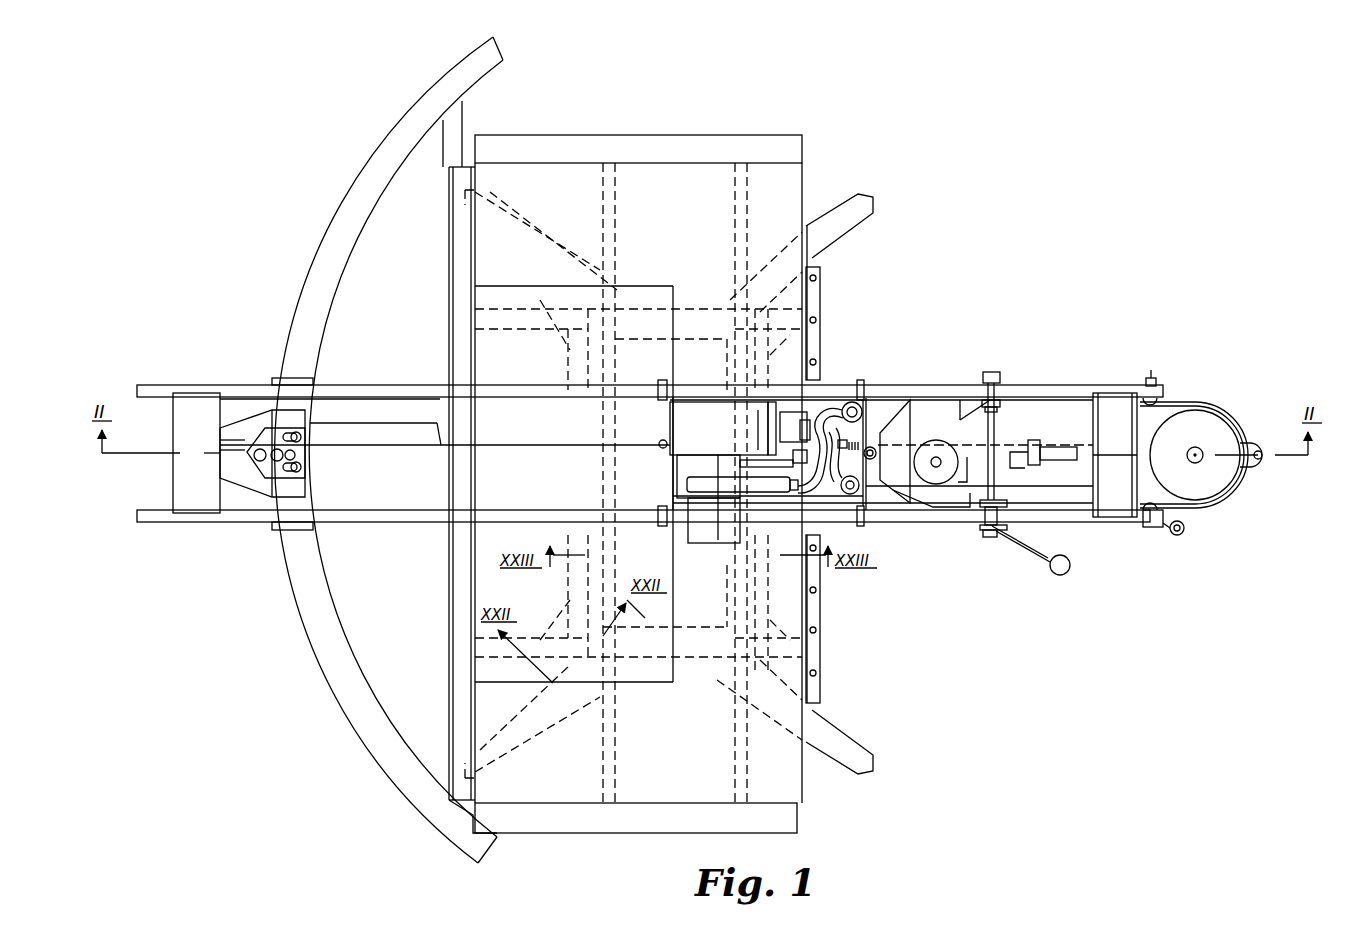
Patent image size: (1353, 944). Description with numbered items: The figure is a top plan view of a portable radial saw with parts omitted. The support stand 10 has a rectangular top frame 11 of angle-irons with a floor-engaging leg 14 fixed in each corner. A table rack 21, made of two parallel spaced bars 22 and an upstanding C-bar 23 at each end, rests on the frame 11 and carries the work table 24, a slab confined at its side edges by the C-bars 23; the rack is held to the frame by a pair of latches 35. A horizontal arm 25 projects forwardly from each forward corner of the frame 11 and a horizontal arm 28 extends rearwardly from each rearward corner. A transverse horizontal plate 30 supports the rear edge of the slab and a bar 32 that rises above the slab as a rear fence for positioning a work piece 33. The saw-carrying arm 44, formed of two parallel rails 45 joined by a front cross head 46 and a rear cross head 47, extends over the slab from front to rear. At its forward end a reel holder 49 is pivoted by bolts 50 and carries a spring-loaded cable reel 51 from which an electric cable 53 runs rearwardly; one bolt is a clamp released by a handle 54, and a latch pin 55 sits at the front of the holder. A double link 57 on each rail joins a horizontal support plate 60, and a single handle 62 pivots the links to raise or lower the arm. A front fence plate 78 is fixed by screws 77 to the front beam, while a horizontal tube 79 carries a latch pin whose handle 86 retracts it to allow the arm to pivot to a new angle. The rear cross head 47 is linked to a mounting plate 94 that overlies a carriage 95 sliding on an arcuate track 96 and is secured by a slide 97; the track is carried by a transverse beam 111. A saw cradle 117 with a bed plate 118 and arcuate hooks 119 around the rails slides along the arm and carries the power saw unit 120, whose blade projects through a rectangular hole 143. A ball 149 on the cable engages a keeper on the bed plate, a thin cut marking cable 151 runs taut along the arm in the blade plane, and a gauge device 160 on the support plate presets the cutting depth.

The support stand 10 is at (859, 195).
The rectangular top frame 11 is at (694, 294).
The floor-engaging leg 14 is at (875, 217).
The table rack 21 is at (620, 238).
The bar 22 is at (617, 212).
The C-bar 23 is at (652, 136).
The work table 24 is at (797, 800).
The horizontal arm 25 is at (820, 303).
The horizontal arm 28 is at (513, 331).
The horizontal plate 30 is at (448, 625).
The bar 32 is at (455, 599).
The work piece 33 is at (645, 684).
The latch 35 is at (587, 555).
The saw-carrying arm 44 is at (400, 384).
The rail 45 is at (352, 385).
The front cross head 46 is at (1113, 401).
The rear cross head 47 is at (202, 405).
The reel holder 49 is at (1210, 402).
The bolt 50 is at (1152, 386).
The spring-loaded cable reel 51 is at (1221, 484).
The electric cable 53 is at (1092, 492).
The handle 54 is at (1184, 533).
The latch pin 55 is at (1261, 452).
The double link 57 is at (1008, 379).
The horizontal support plate 60 is at (967, 413).
The handle 62 is at (1058, 576).
The screw 77 is at (814, 640).
The fence plate 78 is at (806, 608).
The horizontal tube 79 is at (1030, 466).
The handle 86 is at (1058, 447).
The horizontal mounting plate 94 is at (250, 485).
The carriage 95 is at (288, 528).
The arcuate track 96 is at (300, 617).
The slide 97 is at (302, 458).
The transverse beam 111 is at (446, 155).
The saw cradle 117 is at (840, 396).
The bed plate 118 is at (852, 506).
The arcuate hook 119 is at (864, 381).
The power saw unit 120 is at (694, 423).
The rectangular hole 143 is at (799, 416).
The ball 149 is at (858, 491).
The cut marking line cable 151 is at (524, 446).
The gauge device 160 is at (941, 438).